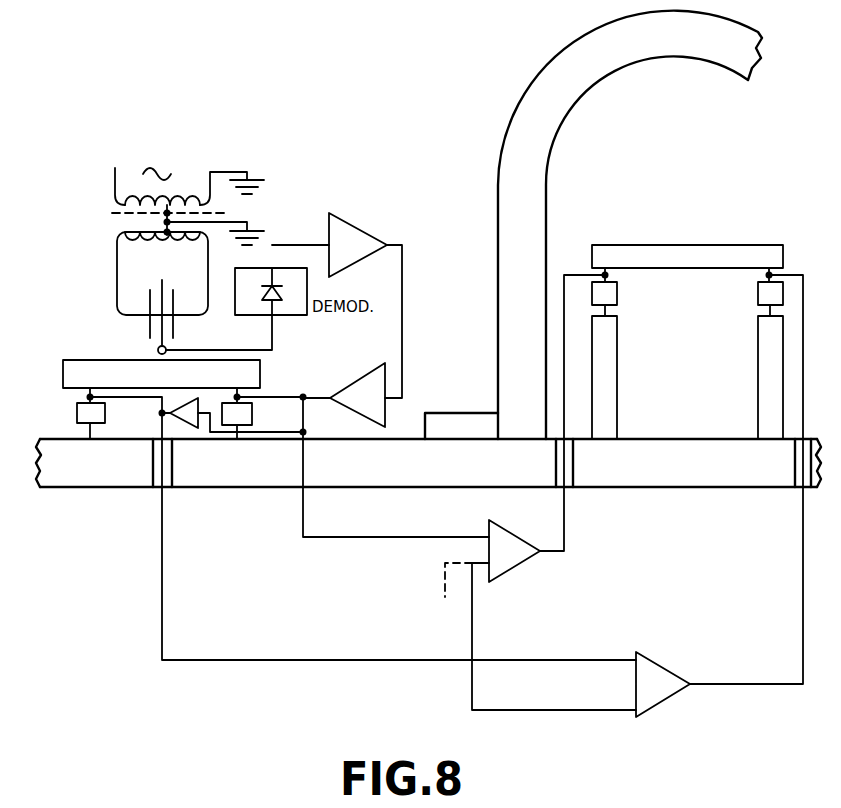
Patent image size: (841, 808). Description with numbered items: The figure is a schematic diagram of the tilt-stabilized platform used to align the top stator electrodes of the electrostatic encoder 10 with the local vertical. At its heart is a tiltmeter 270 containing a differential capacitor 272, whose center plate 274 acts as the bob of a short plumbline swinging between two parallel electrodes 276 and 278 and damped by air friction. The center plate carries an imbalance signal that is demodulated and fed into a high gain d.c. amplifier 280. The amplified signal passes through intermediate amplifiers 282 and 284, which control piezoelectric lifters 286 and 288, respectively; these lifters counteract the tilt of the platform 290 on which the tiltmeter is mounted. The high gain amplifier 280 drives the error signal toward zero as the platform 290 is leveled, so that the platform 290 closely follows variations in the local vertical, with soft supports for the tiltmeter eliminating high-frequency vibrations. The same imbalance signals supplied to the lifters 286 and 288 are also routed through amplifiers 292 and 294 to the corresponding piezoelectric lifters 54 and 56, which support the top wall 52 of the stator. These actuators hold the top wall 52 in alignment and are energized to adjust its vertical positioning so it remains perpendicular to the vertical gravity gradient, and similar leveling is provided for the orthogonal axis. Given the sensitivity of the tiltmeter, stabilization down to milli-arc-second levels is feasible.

The electrostatic encoder 10 is at (590, 148).
The top wall 52 is at (700, 248).
The piezoelectric actuator 54 is at (617, 292).
The piezoelectric actuator 56 is at (758, 292).
The tiltmeter 270 is at (278, 166).
The differential capacitor 272 is at (152, 279).
The center plate 274 is at (158, 350).
The parallel electrode 276 is at (148, 303).
The parallel electrode 278 is at (177, 298).
The high gain d.c. amplifier 280 is at (365, 237).
The intermediate amplifier 282 is at (360, 380).
The intermediate amplifier 284 is at (182, 431).
The piezoelectric lifter 286 is at (252, 413).
The piezoelectric lifter 288 is at (105, 409).
The platform 290 is at (66, 372).
The amplifier 292 is at (512, 568).
The amplifier 294 is at (661, 665).